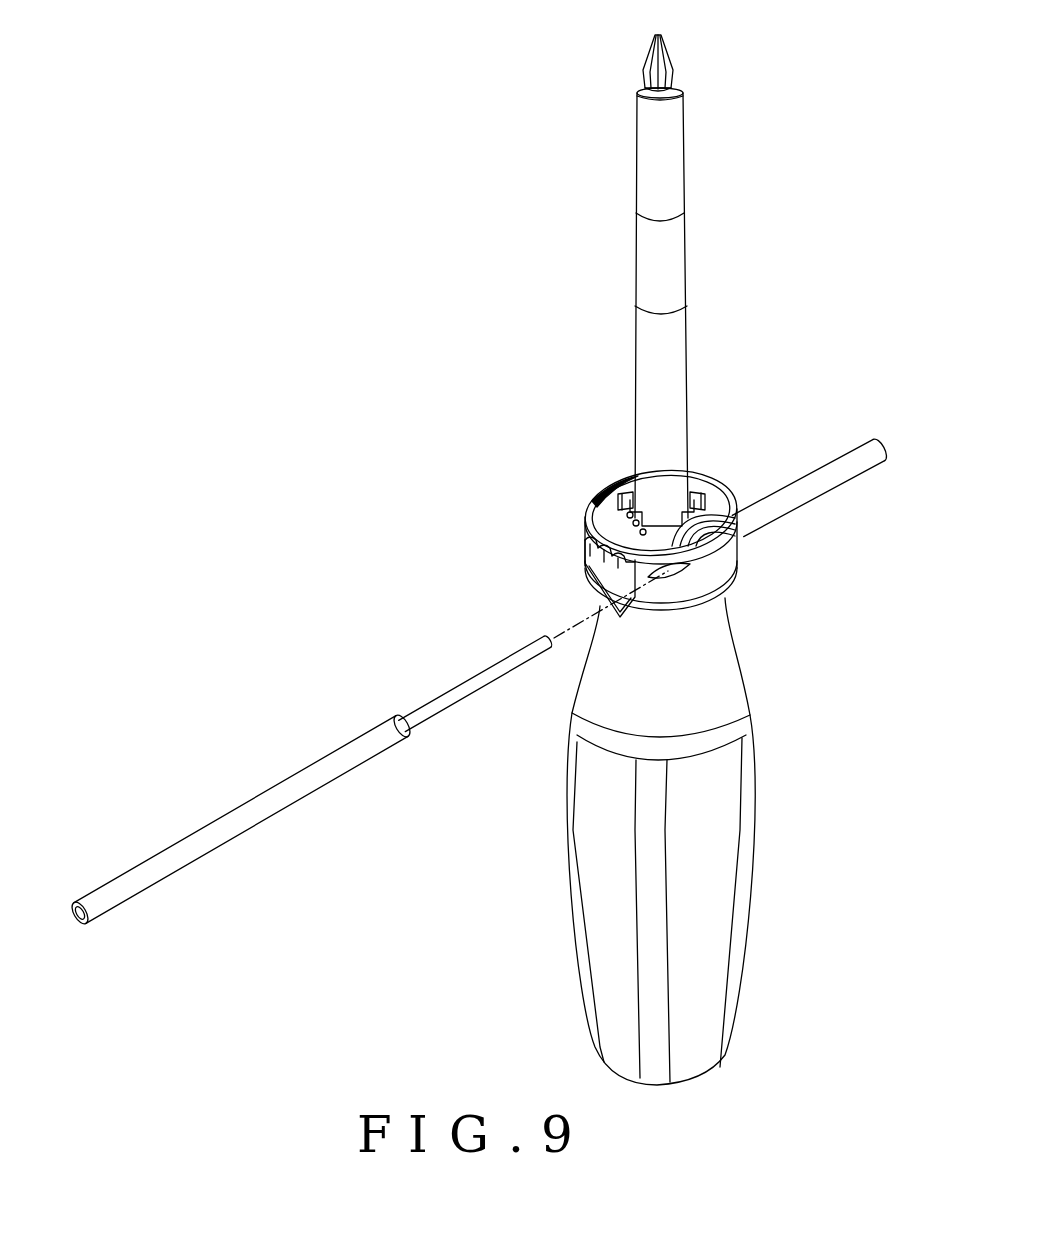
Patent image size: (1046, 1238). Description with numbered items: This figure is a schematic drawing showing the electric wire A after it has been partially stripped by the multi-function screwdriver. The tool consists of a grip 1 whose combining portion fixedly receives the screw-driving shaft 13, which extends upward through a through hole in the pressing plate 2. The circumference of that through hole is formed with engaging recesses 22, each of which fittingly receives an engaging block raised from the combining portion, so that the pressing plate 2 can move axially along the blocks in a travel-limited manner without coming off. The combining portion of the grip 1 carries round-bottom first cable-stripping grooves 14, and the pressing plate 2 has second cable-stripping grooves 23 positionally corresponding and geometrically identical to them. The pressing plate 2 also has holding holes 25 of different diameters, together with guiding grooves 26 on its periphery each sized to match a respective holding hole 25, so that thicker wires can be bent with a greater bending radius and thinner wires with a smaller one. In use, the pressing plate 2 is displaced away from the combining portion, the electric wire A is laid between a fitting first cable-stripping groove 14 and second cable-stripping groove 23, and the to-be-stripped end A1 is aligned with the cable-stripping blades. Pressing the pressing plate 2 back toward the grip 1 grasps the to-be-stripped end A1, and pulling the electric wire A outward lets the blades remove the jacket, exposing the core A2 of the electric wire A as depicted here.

The grip 1 is at (720, 862).
The pressing plate 2 is at (633, 487).
The screw-driving shaft 13 is at (672, 268).
The first cable-stripping groove 14 is at (727, 592).
The engaging recess 22 is at (703, 507).
The second cable-stripping groove 23 is at (707, 512).
The holding hole 25 is at (610, 512).
The guiding groove 26 is at (605, 543).
The electric wire A is at (305, 777).
The to-be-stripped end A1 is at (760, 518).
The core A2 is at (532, 637).